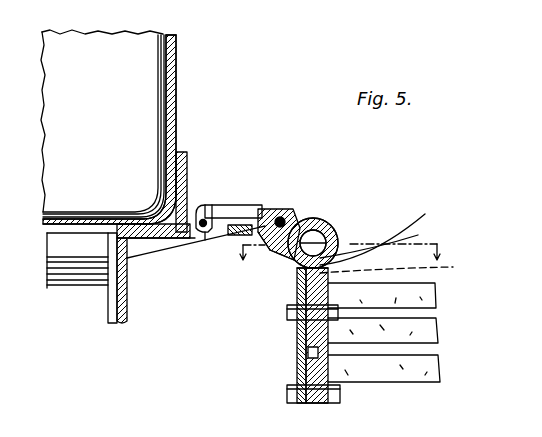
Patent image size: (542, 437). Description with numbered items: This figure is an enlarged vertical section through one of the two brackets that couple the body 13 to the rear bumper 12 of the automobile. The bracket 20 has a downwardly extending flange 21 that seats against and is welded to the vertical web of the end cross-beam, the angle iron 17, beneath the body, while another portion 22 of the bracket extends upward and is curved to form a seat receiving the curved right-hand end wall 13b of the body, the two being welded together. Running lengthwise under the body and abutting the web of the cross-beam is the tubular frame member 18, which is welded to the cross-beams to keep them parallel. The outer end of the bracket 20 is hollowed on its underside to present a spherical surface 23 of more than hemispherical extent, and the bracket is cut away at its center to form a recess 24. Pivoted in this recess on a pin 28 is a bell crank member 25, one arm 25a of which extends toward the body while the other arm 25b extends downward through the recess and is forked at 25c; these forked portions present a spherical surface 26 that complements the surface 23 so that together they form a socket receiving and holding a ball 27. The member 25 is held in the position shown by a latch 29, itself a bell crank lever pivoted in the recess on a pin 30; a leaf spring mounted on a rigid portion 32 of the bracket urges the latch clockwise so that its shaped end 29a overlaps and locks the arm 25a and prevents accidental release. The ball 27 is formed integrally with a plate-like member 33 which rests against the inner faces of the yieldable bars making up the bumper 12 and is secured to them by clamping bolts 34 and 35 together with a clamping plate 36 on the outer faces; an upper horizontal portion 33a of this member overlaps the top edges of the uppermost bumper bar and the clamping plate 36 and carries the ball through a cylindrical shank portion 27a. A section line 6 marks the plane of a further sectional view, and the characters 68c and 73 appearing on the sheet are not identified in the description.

The body 13 is at (108, 127).
The right-hand end wall 13b is at (177, 102).
The upwardly extending portion 22 is at (187, 162).
The bracket 20 is at (172, 249).
The downwardly extending flange 21 is at (127, 308).
The angle iron 17 is at (108, 309).
The tubular frame member 18 is at (43, 292).
The latch 29 is at (204, 206).
The latch arm portion 29a is at (217, 205).
The pin 30 is at (211, 240).
The rigid portion 32 is at (232, 240).
The arm 25a is at (237, 224).
The pin 28 is at (297, 210).
The member 25 is at (284, 216).
The spherical surface 26 is at (322, 222).
The spherical surface 23 is at (337, 243).
The ball 27 is at (385, 232).
The shank portion 27a is at (387, 236).
The bifurcated portion 25c is at (404, 265).
The arm 25b is at (262, 262).
The recess 24 is at (262, 262).
The section line 6 is at (338, 261).
The plate-like member 33 is at (312, 335).
The upper horizontally extending portion 33a is at (293, 280).
The clamping plate 36 is at (297, 372).
The clamping bolt 34 is at (308, 404).
The clamping bolt 35 is at (332, 300).
The bumper 12 is at (437, 300).
The member 68c is at (437, 422).
The member 73 is at (478, 432).